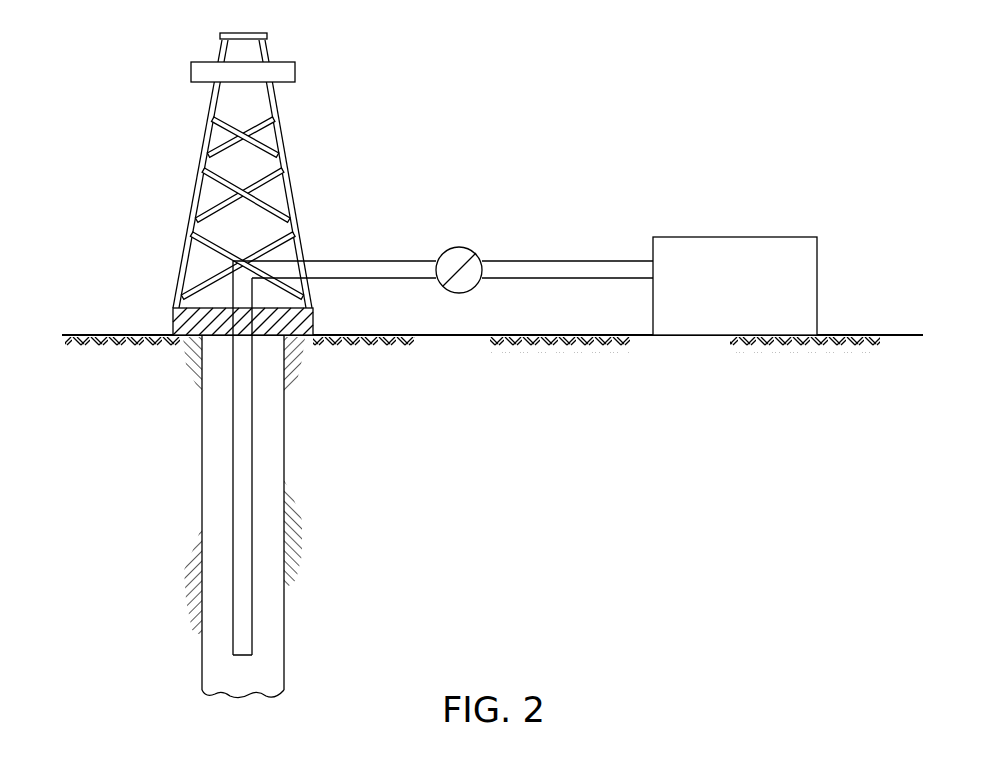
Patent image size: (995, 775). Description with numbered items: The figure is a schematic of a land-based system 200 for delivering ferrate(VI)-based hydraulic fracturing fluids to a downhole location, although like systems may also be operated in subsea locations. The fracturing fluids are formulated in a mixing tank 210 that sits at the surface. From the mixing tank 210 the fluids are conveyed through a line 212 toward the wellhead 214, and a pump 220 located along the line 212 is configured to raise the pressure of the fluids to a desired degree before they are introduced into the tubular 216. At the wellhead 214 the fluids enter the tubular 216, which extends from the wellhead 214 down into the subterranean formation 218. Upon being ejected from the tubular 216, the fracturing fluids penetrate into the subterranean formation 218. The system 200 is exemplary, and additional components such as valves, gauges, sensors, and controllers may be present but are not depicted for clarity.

The system 200 is at (612, 68).
The mixing tank 210 is at (686, 237).
The line 212 is at (369, 261).
The wellhead 214 is at (173, 322).
The tubular 216 is at (253, 441).
The subterranean formation 218 is at (127, 528).
The pump 220 is at (457, 247).